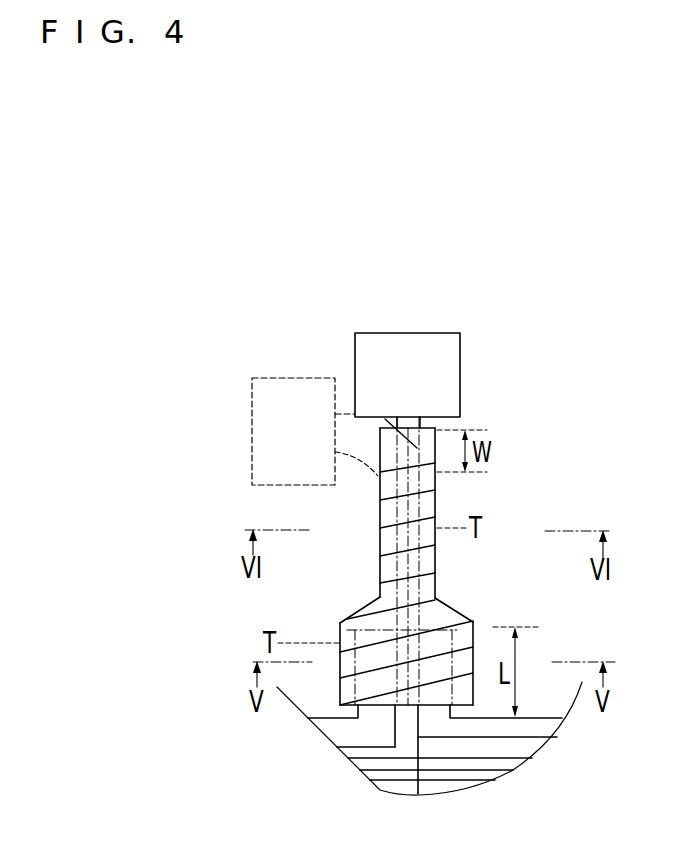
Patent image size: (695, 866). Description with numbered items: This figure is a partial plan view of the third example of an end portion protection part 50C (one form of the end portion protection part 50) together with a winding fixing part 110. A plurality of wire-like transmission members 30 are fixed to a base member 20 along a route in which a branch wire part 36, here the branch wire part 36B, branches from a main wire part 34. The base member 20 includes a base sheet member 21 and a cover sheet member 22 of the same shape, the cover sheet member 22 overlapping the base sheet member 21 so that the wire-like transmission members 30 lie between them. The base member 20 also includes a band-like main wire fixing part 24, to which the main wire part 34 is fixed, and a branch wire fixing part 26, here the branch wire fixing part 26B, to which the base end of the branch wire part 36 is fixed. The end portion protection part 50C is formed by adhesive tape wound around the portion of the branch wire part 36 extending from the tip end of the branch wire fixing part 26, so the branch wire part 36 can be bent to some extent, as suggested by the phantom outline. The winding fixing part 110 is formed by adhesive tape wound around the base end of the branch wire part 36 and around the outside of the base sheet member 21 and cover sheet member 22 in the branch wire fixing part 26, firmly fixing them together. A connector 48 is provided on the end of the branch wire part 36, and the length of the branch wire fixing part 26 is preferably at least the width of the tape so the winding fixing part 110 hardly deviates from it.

The connector 48 is at (292, 379).
The end portion protection part 50C is at (462, 523).
The end portion protection part 50 is at (437, 498).
The branch wire part 36 is at (312, 512).
The branch wire part 36B is at (378, 506).
The base member 20 is at (365, 635).
The base sheet member 21 is at (338, 622).
The cover sheet member 22 is at (377, 625).
The branch wire fixing part 26 is at (496, 632).
The branch wire fixing part 26B is at (477, 620).
The main wire fixing part 24 is at (545, 716).
The main wire part 34 is at (550, 730).
The wire-like transmission member 30 is at (363, 750).
The winding fixing part 110 is at (340, 689).